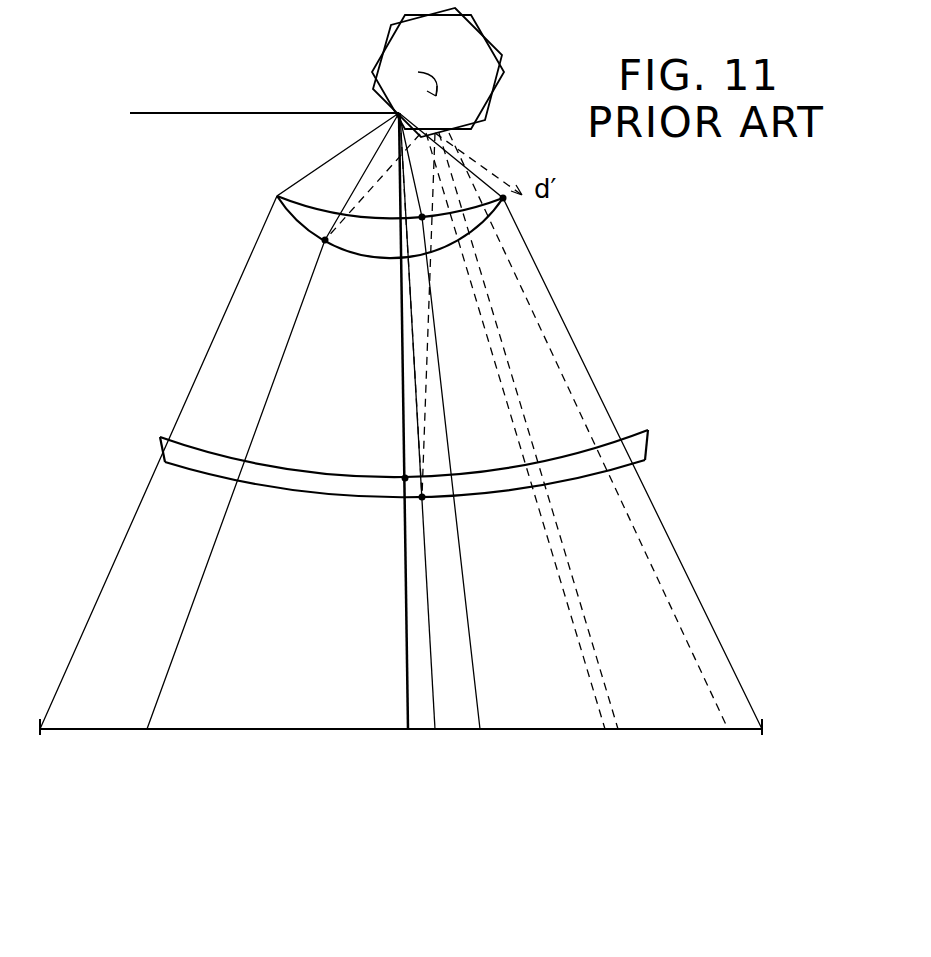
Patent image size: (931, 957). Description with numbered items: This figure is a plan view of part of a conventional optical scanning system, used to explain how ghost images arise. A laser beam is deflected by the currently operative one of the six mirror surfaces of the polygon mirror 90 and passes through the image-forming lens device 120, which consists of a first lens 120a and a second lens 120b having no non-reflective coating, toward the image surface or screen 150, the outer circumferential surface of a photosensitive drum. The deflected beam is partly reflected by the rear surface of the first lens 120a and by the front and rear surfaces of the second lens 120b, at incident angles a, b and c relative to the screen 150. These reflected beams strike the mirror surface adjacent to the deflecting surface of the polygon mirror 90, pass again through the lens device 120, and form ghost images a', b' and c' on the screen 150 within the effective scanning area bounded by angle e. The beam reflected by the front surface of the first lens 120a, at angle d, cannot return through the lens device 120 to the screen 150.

The polygon mirror 90 is at (473, 44).
The image-forming lens device 120 is at (137, 242).
The first lens 120a is at (276, 196).
The second lens 120b is at (172, 436).
The image surface or screen 150 is at (738, 729).